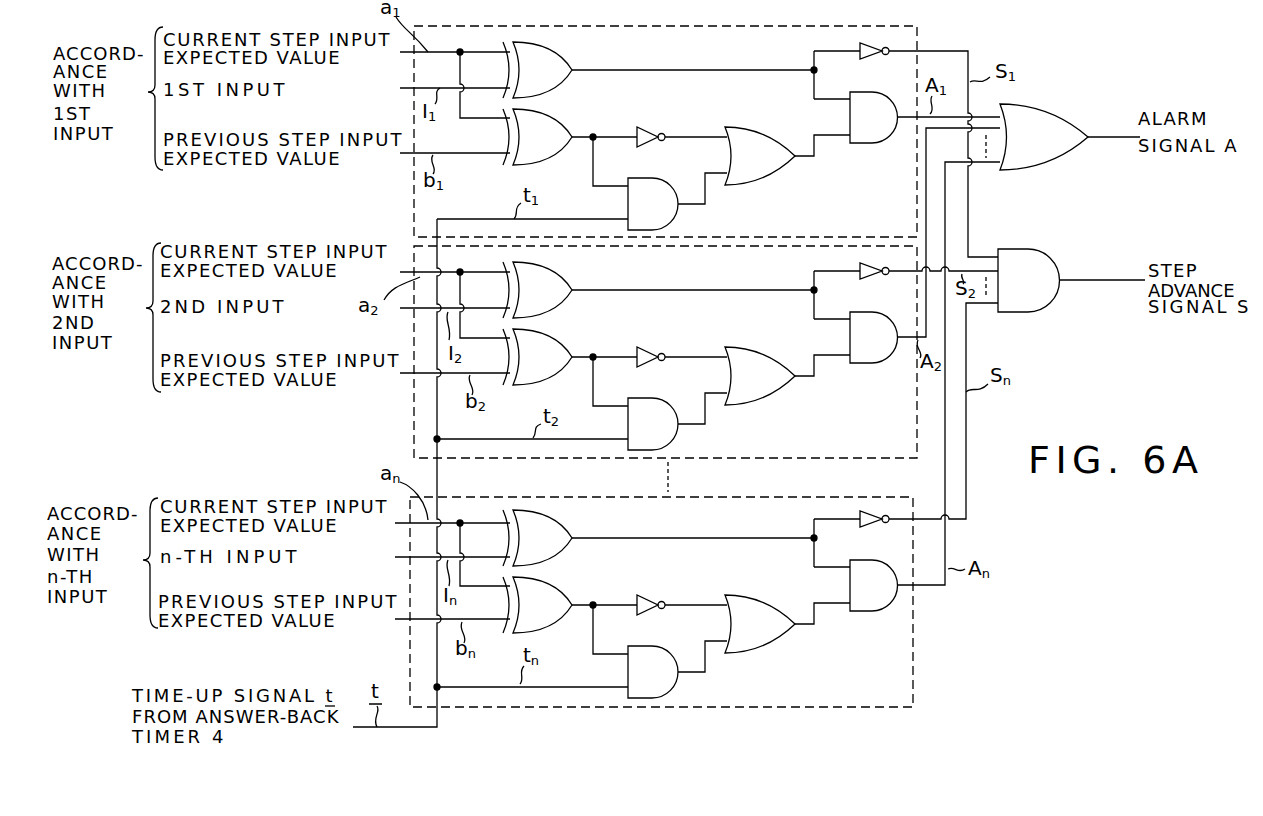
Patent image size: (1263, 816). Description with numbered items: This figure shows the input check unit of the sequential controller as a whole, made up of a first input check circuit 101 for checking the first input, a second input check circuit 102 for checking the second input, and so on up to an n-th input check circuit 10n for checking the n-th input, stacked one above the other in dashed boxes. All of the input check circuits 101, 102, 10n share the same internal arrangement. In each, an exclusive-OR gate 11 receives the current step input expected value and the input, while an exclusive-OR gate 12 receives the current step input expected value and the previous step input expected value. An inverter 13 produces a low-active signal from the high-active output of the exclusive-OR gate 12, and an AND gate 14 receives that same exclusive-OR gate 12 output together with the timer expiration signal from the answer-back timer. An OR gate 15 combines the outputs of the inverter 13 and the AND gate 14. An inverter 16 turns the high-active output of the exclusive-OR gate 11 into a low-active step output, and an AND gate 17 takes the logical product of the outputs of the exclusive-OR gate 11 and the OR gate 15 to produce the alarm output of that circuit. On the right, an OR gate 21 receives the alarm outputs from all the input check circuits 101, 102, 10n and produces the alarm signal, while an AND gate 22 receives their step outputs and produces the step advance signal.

The exclusive-OR gate 11 is at (562, 56).
The exclusive-OR gate 12 is at (558, 120).
The inverter 13 is at (647, 126).
The AND gate 14 is at (660, 178).
The OR gate 15 is at (764, 127).
The inverter 16 is at (863, 60).
The AND gate 17 is at (882, 144).
The OR gate 21 is at (1048, 105).
The AND gate 22 is at (1047, 250).
The first input check circuit 101 is at (917, 26).
The second input check circuit 102 is at (812, 458).
The n-th input check circuit 10n is at (913, 668).